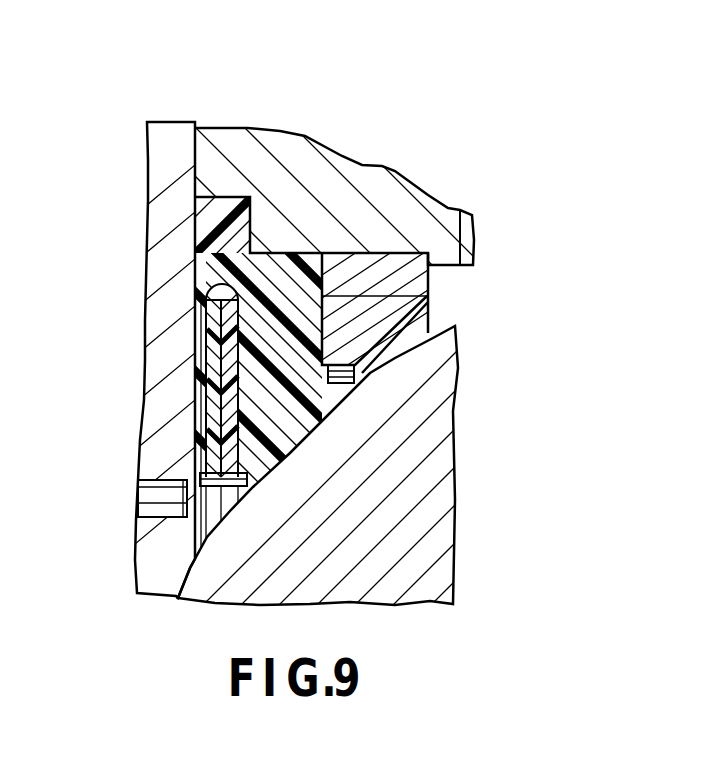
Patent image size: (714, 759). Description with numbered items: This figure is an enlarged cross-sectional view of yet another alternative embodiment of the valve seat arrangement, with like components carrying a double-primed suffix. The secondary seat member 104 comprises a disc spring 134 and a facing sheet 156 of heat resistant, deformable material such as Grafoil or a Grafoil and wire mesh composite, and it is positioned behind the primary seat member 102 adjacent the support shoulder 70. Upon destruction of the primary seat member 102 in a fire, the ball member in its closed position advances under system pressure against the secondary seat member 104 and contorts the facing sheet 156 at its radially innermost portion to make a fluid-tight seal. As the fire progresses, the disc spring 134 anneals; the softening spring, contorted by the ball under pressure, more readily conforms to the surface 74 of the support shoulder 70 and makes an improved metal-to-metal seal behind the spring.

The support shoulder 70 is at (165, 242).
The surface of support shoulder 74 is at (203, 328).
The primary seat member 102 is at (428, 295).
The secondary seat member 104 is at (182, 358).
The disc spring 134 is at (205, 396).
The facing sheet 156 is at (230, 425).